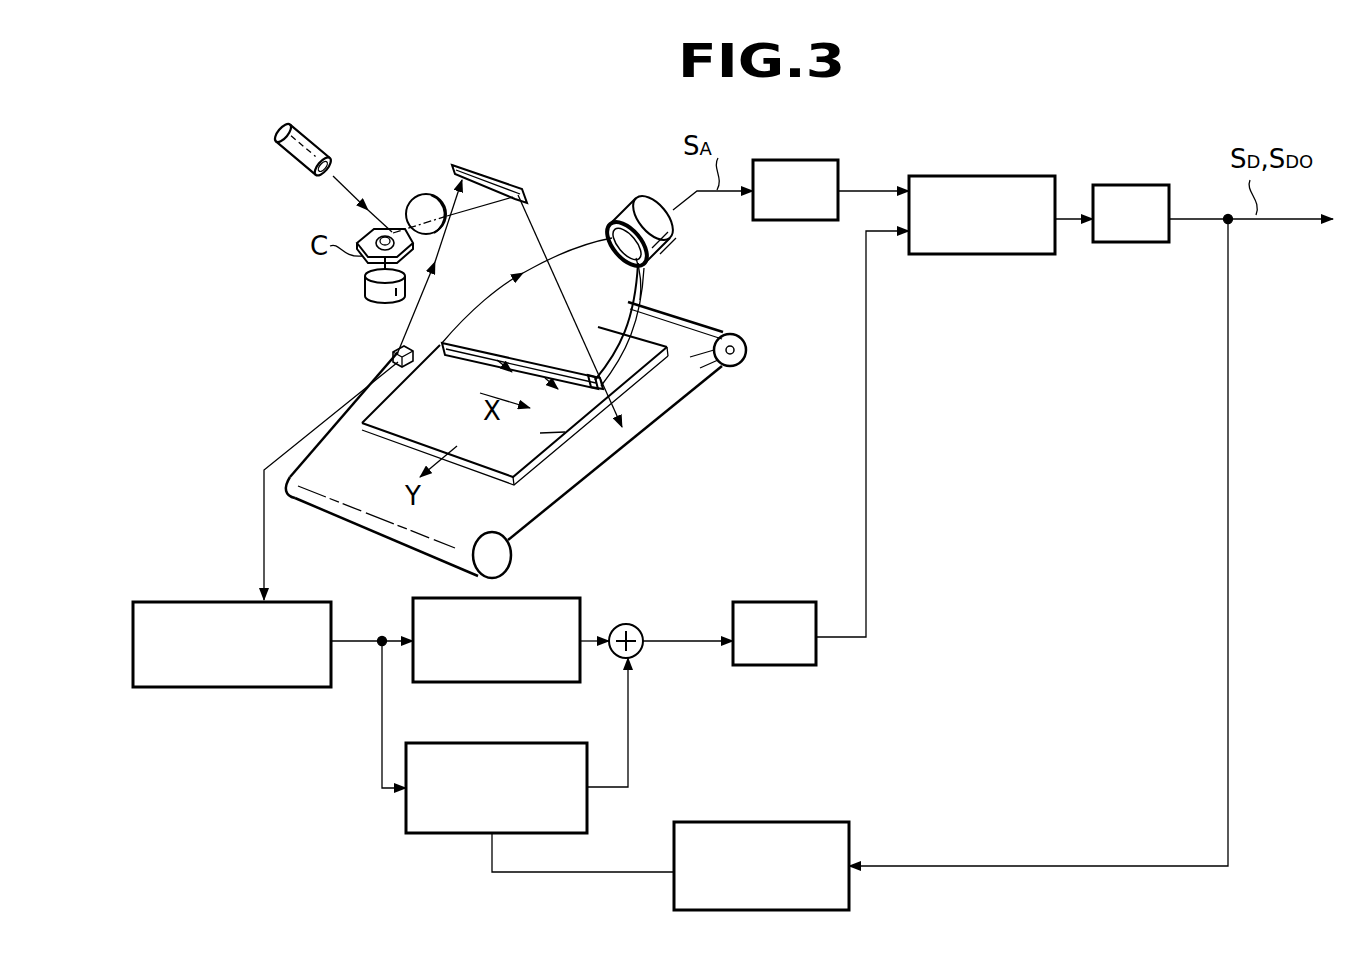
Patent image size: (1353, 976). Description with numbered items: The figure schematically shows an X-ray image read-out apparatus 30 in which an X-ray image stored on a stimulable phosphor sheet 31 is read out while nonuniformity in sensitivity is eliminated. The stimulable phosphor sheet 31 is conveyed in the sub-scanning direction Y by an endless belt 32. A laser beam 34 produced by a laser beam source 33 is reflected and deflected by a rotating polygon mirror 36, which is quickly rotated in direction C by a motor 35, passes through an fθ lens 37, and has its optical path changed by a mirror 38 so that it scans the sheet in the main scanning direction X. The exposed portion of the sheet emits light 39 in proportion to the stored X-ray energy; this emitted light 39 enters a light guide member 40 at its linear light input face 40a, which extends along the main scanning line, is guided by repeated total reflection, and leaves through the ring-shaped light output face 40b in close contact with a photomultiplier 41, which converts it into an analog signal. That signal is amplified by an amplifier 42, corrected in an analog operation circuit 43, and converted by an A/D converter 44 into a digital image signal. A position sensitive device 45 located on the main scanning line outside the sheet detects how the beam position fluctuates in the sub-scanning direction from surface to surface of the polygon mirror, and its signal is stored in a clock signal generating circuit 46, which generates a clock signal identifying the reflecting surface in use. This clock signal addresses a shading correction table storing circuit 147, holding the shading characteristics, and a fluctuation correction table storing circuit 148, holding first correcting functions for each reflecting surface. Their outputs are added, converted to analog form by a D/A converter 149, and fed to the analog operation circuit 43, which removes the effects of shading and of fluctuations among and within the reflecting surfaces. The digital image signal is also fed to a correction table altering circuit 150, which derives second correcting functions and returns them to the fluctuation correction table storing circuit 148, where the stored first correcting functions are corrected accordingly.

The X-ray image read-out apparatus 30 is at (458, 108).
The stimulable phosphor sheet 31 is at (577, 452).
The endless belt 32 is at (517, 487).
The laser beam source 33 is at (305, 145).
The laser beam 34 is at (342, 190).
The motor 35 is at (372, 288).
The rotating polygon mirror 36 is at (360, 237).
The fθ lens 37 is at (421, 193).
The mirror 38 is at (490, 183).
The emitted light 39 is at (455, 368).
The light guide member 40 is at (578, 272).
The linear light input face 40a is at (565, 397).
The ring-shaped light output face 40b is at (645, 272).
The photomultiplier 41 is at (635, 210).
The amplifier 42 is at (832, 160).
The analog operation circuit 43 is at (1000, 176).
The A/D converter 44 is at (1135, 185).
The position sensitive device 45 is at (390, 354).
The clock signal generating circuit 46 is at (218, 602).
The shading correction table storing circuit 147 is at (555, 578).
The fluctuation correction table storing circuit 148 is at (553, 723).
The D/A converter 149 is at (781, 602).
The correction table altering circuit 150 is at (806, 822).